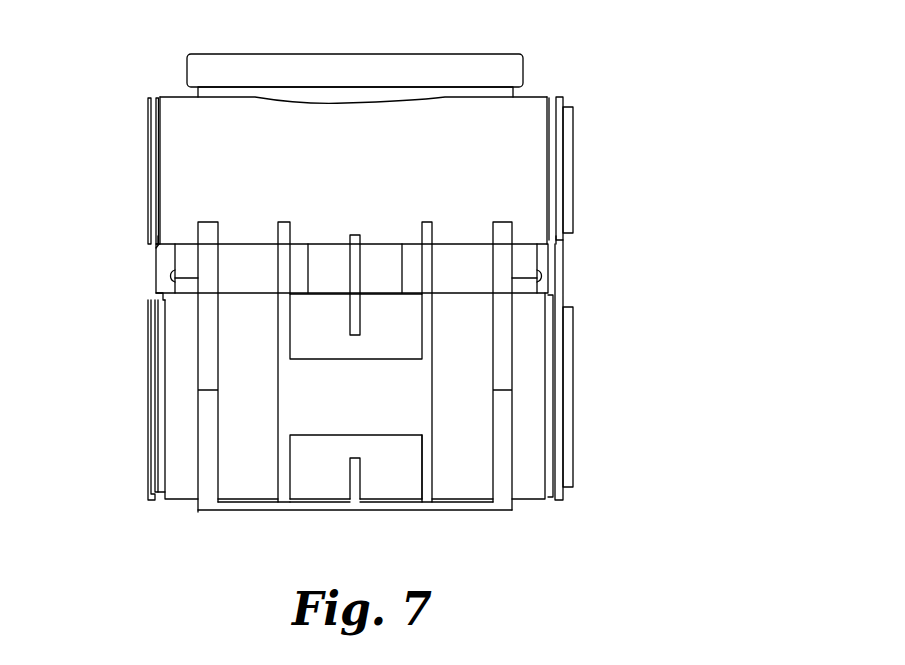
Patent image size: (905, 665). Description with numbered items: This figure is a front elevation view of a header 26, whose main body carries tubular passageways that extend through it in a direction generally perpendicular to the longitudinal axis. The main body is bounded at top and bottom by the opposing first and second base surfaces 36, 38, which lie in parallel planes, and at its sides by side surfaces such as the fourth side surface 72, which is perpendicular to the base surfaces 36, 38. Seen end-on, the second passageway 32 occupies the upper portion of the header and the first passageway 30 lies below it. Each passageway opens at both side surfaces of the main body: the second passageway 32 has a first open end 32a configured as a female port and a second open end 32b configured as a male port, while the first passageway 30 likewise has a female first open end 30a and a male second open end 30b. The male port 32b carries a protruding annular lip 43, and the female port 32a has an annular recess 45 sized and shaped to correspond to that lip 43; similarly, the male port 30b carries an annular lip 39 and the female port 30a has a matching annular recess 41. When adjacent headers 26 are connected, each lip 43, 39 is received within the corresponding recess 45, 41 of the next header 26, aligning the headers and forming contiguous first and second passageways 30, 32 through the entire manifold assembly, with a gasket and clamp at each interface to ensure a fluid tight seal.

The header 26 is at (692, 80).
The first base surface 36 is at (176, 97).
The second passageway 32 is at (518, 130).
The annular recess 45 is at (147, 122).
The first open end of the second passageway 32a is at (148, 186).
The second open end of the second passageway 32b is at (558, 176).
The annular lip 43 is at (573, 133).
The fourth side surface 72 is at (198, 323).
The first passageway 30 is at (527, 480).
The first open end of the first passageway 30a is at (150, 378).
The second open end of the first passageway 30b is at (560, 340).
The annular recess 41 is at (155, 432).
The annular lip 39 is at (573, 380).
The second base surface 38 is at (173, 499).